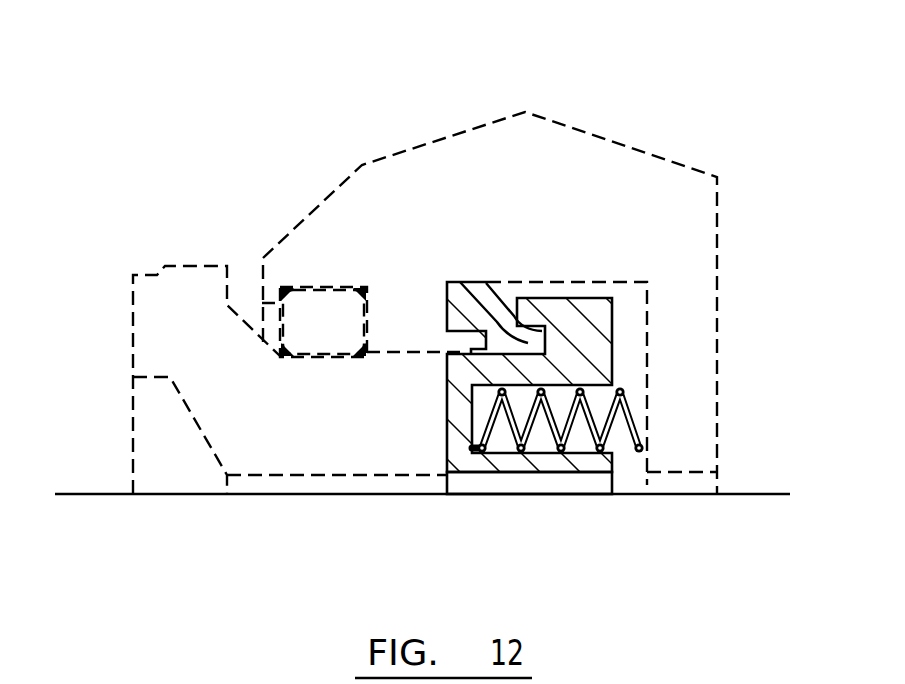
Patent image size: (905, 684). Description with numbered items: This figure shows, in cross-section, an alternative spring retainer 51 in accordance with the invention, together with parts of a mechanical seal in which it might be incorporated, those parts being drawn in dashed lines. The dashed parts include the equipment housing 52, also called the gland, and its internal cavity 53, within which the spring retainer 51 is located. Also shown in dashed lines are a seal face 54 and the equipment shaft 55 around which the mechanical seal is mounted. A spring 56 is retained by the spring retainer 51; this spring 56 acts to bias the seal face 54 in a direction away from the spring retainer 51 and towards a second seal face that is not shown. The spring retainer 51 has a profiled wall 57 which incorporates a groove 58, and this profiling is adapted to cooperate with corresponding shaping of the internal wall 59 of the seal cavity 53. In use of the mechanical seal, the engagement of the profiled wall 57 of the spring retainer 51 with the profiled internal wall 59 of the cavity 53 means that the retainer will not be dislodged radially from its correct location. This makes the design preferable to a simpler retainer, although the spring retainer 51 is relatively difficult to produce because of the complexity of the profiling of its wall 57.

The spring retainer 51 is at (612, 334).
The equipment housing 52 is at (592, 177).
The internal cavity 53 is at (632, 300).
The seal face 54 is at (193, 318).
The equipment shaft 55 is at (448, 588).
The spring 56 is at (640, 425).
The profiled wall 57 is at (486, 283).
The groove 58 is at (460, 282).
The internal wall 59 is at (447, 300).